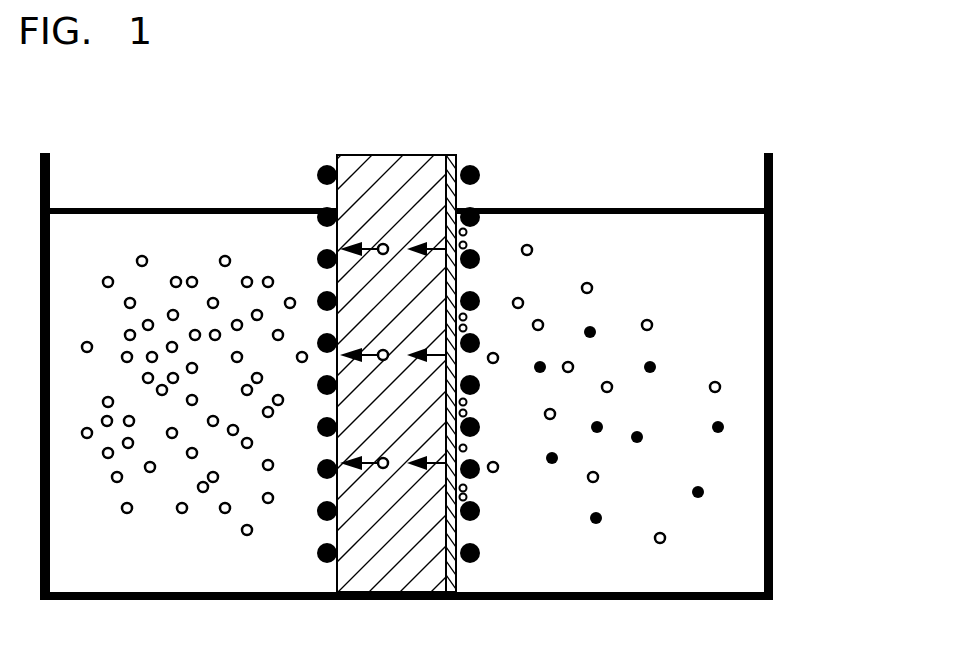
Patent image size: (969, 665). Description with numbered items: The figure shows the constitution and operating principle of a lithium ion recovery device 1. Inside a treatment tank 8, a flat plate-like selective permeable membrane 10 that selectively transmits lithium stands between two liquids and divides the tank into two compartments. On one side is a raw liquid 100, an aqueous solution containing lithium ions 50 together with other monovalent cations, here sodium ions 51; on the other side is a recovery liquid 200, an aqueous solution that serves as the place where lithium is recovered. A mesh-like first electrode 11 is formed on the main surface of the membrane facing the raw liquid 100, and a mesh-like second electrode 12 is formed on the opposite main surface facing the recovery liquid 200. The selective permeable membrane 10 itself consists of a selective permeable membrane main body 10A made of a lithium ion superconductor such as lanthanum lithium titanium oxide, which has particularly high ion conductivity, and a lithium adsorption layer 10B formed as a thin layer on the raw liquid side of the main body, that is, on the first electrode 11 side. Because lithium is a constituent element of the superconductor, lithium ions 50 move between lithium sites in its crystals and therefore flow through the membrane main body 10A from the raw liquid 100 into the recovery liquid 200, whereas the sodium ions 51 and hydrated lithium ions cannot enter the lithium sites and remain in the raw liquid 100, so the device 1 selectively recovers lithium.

The lithium ion recovery device 1 is at (856, 629).
The treatment tank 8 is at (773, 428).
The selective permeable membrane 10 is at (393, 148).
The selective permeable membrane main body 10A is at (362, 165).
The lithium adsorption layer 10B is at (448, 170).
The first electrode 11 is at (480, 174).
The second electrode 12 is at (317, 174).
The lithium ions 50 is at (176, 277).
The sodium ions 51 is at (590, 326).
The raw liquid 100 is at (697, 240).
The recovery liquid 200 is at (97, 240).